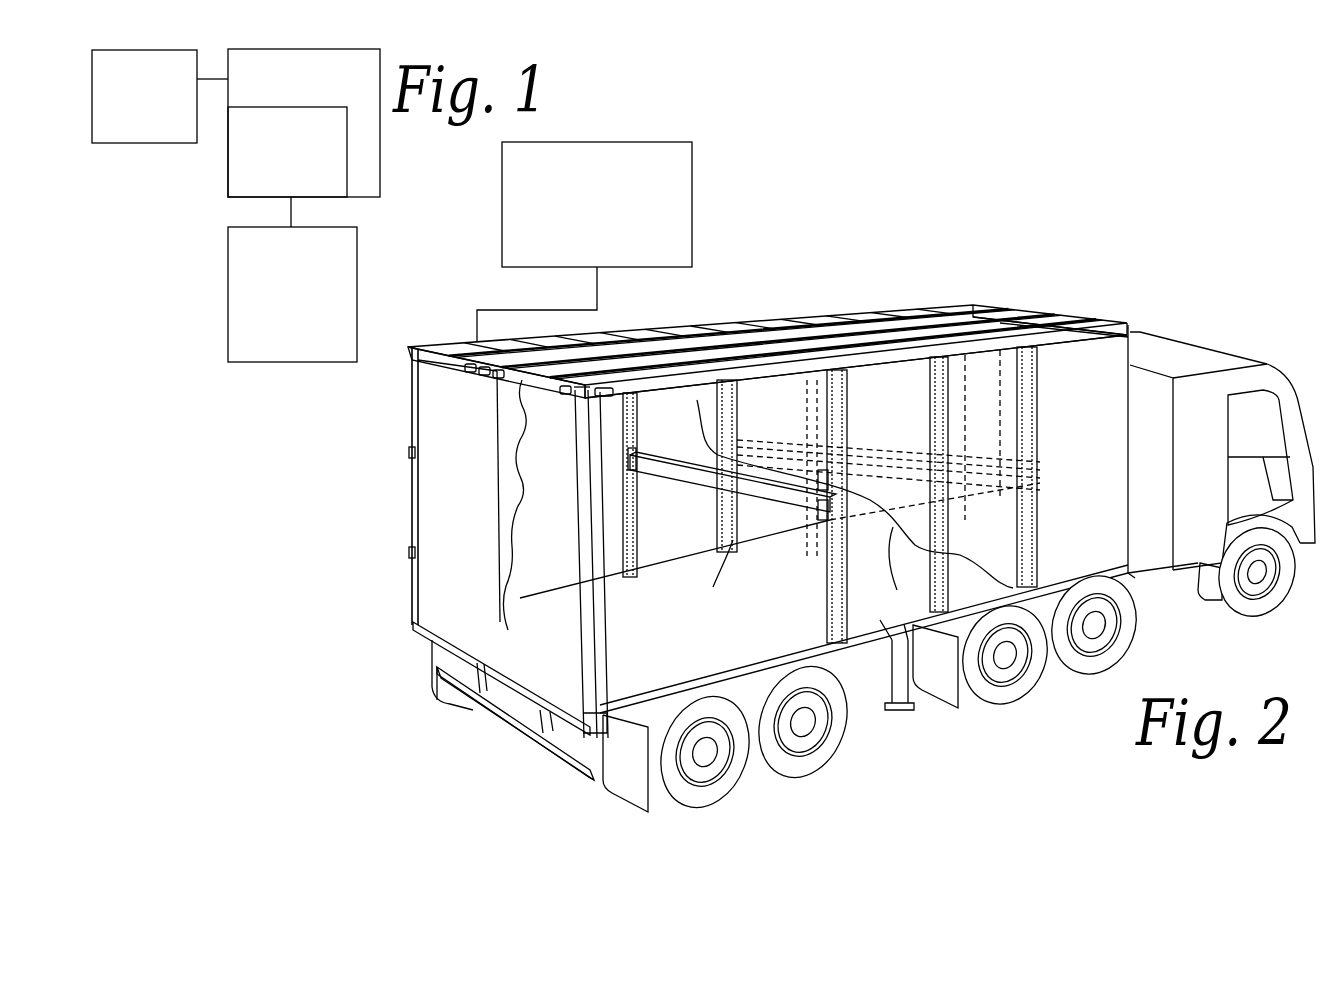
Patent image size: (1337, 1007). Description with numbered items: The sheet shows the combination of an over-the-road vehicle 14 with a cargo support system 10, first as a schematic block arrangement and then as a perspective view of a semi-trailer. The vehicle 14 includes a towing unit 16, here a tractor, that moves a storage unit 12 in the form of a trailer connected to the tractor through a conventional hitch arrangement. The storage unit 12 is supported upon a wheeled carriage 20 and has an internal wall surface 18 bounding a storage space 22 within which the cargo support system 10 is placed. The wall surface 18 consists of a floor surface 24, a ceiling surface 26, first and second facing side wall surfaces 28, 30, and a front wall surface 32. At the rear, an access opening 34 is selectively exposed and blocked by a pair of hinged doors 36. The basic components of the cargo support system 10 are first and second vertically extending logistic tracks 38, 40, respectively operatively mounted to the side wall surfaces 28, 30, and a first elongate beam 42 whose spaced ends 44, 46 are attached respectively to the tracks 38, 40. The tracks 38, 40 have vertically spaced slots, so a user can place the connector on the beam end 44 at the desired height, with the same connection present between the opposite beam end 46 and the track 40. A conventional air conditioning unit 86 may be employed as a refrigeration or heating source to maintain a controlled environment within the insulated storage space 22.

In FIG. 1, the cargo support system 10 is at (305, 346).
In FIG. 2, the cargo support system 10 is at (992, 436).
In FIG. 1, the storage unit 12 is at (352, 124).
In FIG. 2, the storage unit 12 is at (765, 314).
In FIG. 1, the over-the-road vehicle 14 is at (214, 222).
In FIG. 2, the over-the-road vehicle 14 is at (1004, 278).
In FIG. 1, the towing unit 16 is at (157, 135).
In FIG. 2, the towing unit 16 is at (1253, 356).
In FIG. 1, the internal wall surface 18 is at (299, 188).
In FIG. 2, the internal wall surface 18 is at (558, 692).
In FIG. 2, the wheeled carriage 20 is at (772, 788).
In FIG. 2, the storage space 22 is at (525, 660).
In FIG. 2, the floor surface 24 is at (535, 635).
In FIG. 2, the ceiling surface 26 is at (505, 360).
In FIG. 2, the first side wall surface 28 is at (693, 392).
In FIG. 2, the second side wall surface 30 is at (955, 706).
In FIG. 2, the front wall surface 32 is at (1048, 360).
In FIG. 2, the access opening 34 is at (534, 510).
In FIG. 2, the hinged doors 36 is at (507, 413).
In FIG. 2, the first logistic track 38 is at (634, 436).
In FIG. 2, the second logistic track 40 is at (854, 525).
In FIG. 2, the first elongate beam 42 is at (752, 492).
In FIG. 2, the first beam end 44 is at (636, 455).
In FIG. 2, the second beam end 46 is at (822, 524).
In FIG. 2, the air conditioning unit 86 is at (610, 255).